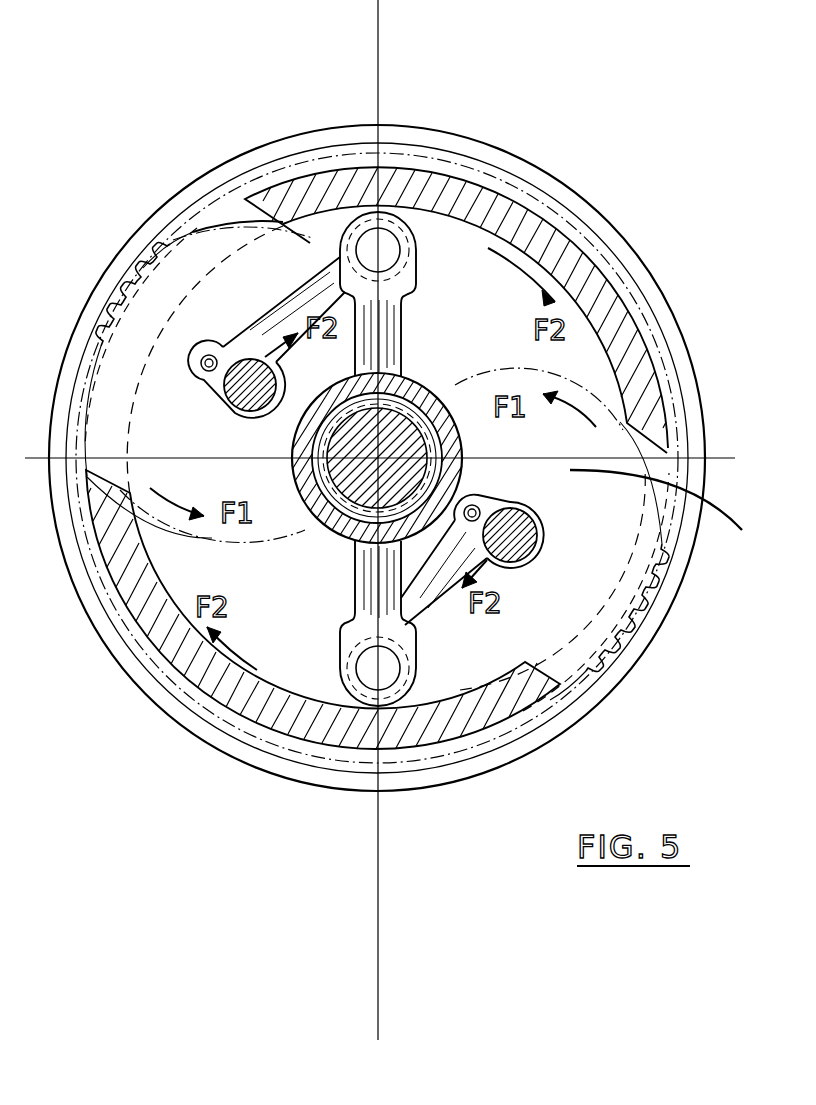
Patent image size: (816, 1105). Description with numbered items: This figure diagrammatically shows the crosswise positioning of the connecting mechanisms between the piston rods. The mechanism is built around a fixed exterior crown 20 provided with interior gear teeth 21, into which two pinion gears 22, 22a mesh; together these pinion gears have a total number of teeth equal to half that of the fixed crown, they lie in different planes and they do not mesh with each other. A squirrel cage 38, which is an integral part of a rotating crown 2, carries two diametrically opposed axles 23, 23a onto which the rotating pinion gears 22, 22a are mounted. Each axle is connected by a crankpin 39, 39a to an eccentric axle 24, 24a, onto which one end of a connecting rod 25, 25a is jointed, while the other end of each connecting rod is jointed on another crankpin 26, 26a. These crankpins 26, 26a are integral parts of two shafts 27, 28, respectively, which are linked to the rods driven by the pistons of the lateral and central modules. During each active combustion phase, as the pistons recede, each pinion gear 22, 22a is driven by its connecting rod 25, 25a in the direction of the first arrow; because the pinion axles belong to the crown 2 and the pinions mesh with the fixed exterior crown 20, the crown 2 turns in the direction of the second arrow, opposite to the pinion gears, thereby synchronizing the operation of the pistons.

The crown 2 is at (426, 184).
The fixed exterior crown 20 is at (307, 143).
The interior gear teeth 21 is at (108, 313).
The pinion gear 22 is at (232, 288).
The pinion gear 22a is at (623, 580).
The axle 23 is at (238, 382).
The axle 23a is at (520, 513).
The eccentric axle 24 is at (208, 352).
The eccentric axle 24a is at (475, 504).
The connecting rod 25 is at (280, 317).
The connecting rod 25a is at (430, 585).
The crankpin 26 is at (388, 290).
The crankpin 26a is at (352, 555).
The shaft 27 is at (382, 378).
The shaft 28 is at (397, 476).
The squirrel cage 38 is at (600, 247).
The crankpin 39 is at (258, 412).
The crankpin 39a is at (535, 537).